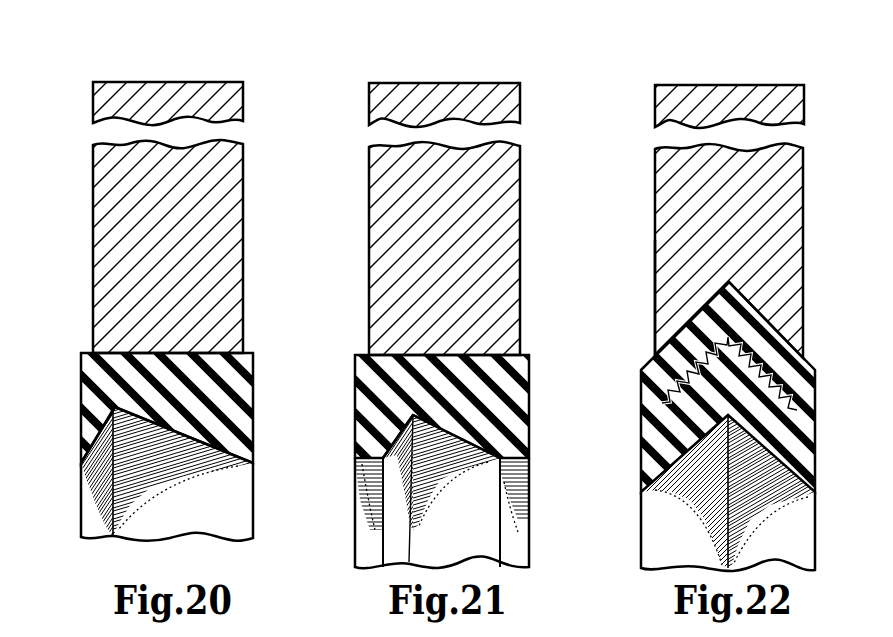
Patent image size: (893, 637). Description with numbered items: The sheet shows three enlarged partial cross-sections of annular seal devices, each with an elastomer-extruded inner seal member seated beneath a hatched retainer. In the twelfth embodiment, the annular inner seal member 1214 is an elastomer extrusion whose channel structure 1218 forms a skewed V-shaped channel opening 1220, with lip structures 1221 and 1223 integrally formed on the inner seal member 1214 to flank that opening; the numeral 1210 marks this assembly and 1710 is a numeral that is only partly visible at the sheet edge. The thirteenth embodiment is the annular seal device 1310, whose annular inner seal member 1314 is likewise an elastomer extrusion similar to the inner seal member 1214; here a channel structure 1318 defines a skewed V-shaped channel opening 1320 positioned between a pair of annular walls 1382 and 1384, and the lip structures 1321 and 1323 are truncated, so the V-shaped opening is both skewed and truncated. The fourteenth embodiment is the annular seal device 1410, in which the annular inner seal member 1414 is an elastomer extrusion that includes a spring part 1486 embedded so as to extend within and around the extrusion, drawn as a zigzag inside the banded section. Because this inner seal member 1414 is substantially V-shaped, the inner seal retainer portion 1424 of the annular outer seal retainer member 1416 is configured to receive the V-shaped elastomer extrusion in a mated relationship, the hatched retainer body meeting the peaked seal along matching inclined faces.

In FIG. 20, the die assembly with first substrate 1210 is at (196, 60).
In FIG. 20, the annular inner seal member 1214 is at (265, 401).
In FIG. 20, the lip structure 1221 is at (90, 428).
In FIG. 20, the lip structure 1223 is at (254, 427).
In FIG. 20, the channel structure 1218 is at (223, 503).
In FIG. 20, the skewed V-shaped channel opening 1220 is at (208, 527).
In FIG. 21, the annular seal device 1310 is at (472, 60).
In FIG. 21, the annular inner seal member 1314 is at (541, 403).
In FIG. 21, the lip structure 1321 is at (372, 383).
In FIG. 21, the lip structure 1323 is at (521, 437).
In FIG. 21, the channel structure 1318 is at (496, 546).
In FIG. 21, the skewed V-shaped channel opening 1320 is at (495, 527).
In FIG. 21, the annular wall 1382 is at (357, 497).
In FIG. 21, the annular wall 1384 is at (527, 483).
In FIG. 22, the annular seal device 1410 is at (752, 60).
In FIG. 22, the annular outer seal retainer member 1416 is at (655, 183).
In FIG. 22, the inner seal retainer portion 1424 is at (655, 256).
In FIG. 22, the annular inner seal member 1414 is at (630, 458).
In FIG. 22, the spring part 1486 is at (817, 394).
In FIG. 22, the partial numeral from adjacent sheet 1710 is at (778, 631).